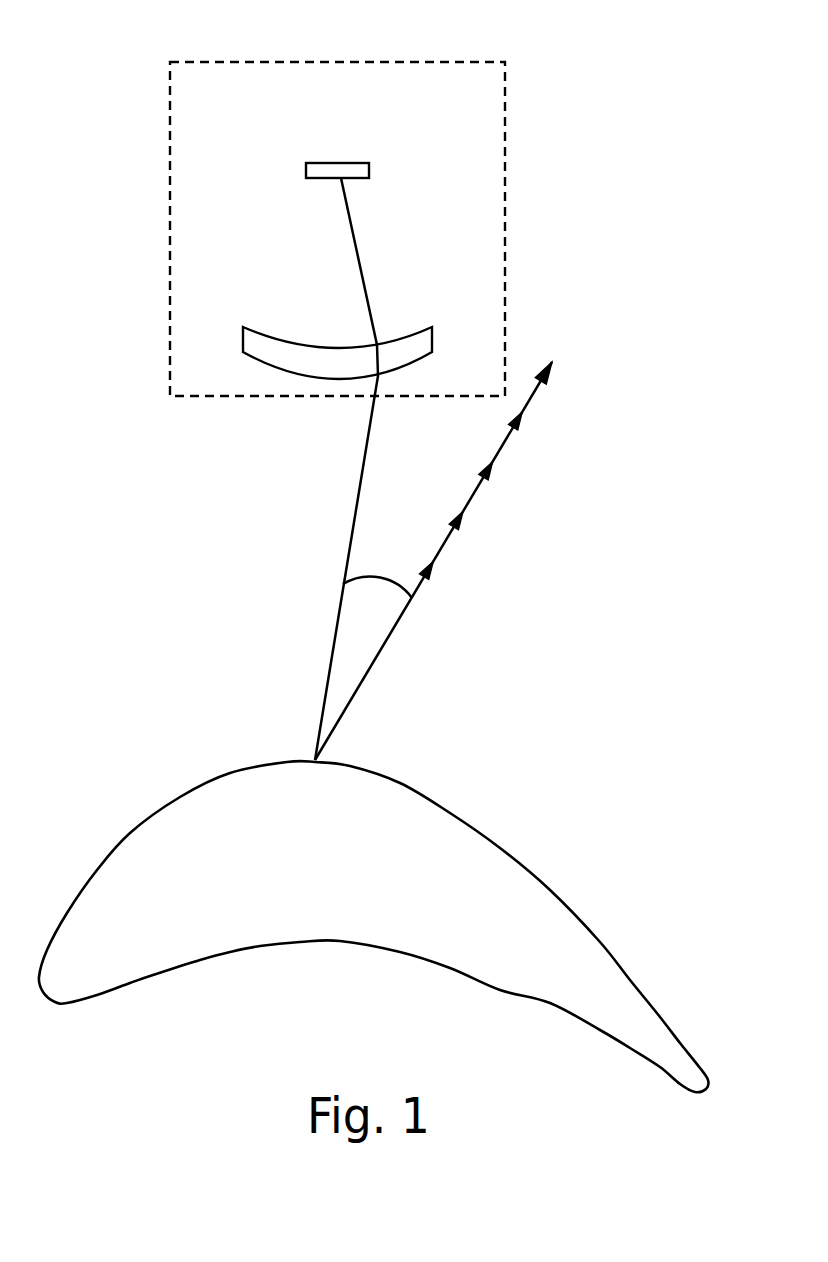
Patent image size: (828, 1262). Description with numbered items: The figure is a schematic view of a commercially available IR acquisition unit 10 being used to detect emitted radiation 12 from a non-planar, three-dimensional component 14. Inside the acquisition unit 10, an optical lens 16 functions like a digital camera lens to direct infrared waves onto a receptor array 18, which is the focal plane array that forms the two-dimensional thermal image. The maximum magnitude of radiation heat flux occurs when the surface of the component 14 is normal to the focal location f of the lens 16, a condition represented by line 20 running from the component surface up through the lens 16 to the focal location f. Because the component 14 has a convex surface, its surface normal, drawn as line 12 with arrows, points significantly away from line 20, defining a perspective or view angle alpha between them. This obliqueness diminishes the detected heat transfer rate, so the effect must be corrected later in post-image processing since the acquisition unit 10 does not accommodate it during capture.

The IR acquisition unit 10 is at (232, 60).
The emitted radiation 12 is at (482, 482).
The non-planar component 14 is at (333, 864).
The optical lens 16 is at (413, 330).
The receptor array 18 is at (350, 163).
The line to focal location 20 is at (357, 488).
The focal location f is at (378, 375).
The view angle alpha is at (377, 576).